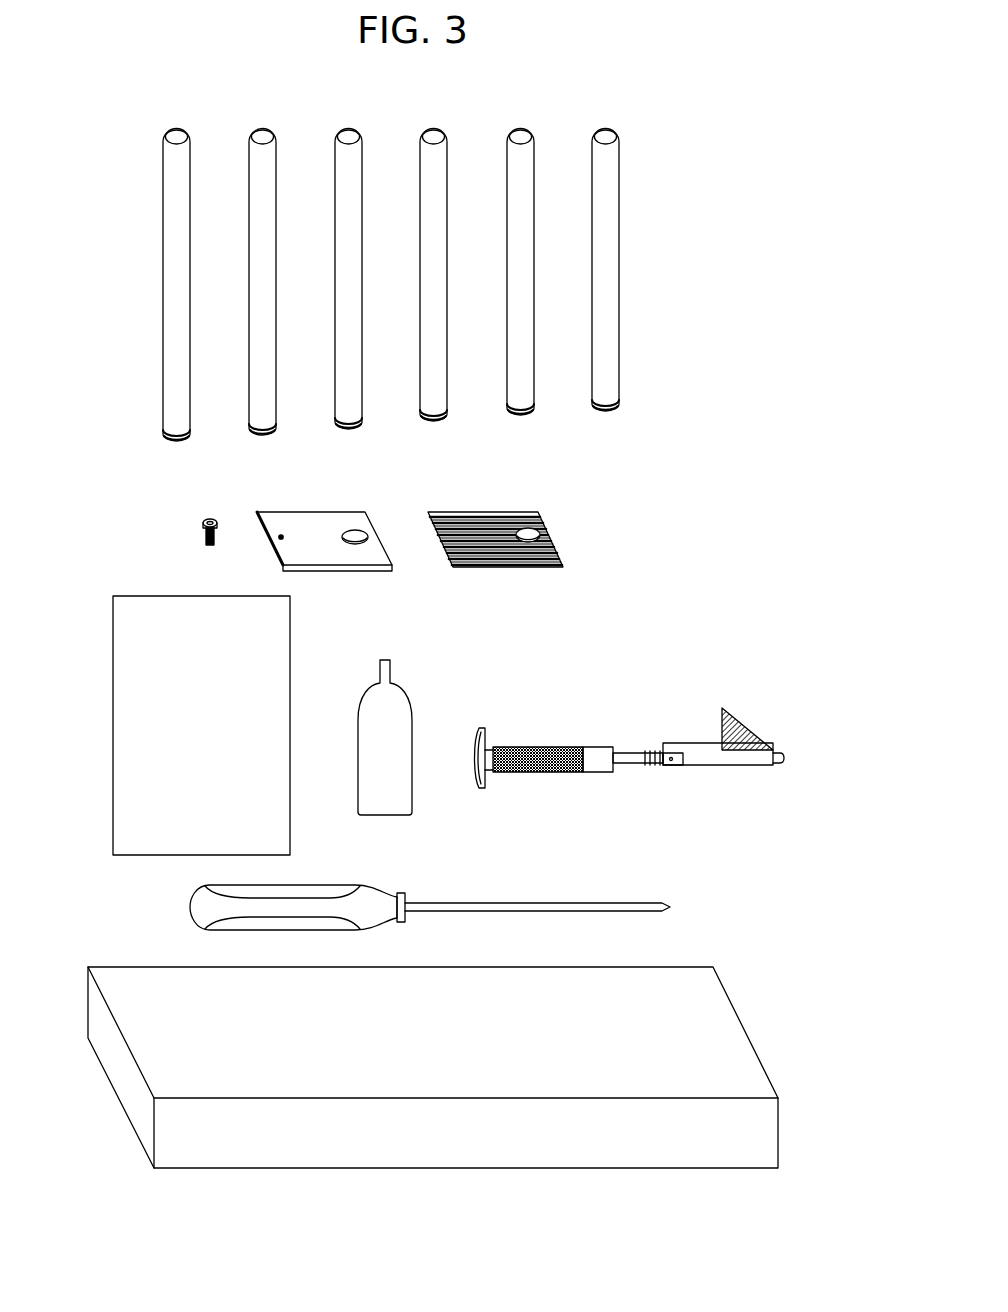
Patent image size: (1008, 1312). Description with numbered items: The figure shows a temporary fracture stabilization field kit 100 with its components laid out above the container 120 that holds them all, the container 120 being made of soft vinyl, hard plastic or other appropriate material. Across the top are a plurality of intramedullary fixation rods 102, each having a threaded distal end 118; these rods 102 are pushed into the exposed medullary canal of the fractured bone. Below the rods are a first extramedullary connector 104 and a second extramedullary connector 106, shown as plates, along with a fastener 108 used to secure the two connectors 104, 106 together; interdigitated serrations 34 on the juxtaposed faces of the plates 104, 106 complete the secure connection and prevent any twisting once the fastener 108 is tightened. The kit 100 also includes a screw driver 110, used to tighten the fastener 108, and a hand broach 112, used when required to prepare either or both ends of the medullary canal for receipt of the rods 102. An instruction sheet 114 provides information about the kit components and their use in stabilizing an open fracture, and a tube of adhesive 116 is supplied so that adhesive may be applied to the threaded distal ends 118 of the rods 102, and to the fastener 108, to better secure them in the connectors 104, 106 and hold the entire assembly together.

The temporary fracture stabilization field kit 100 is at (704, 180).
The intramedullary fixation rods 102 is at (187, 183).
The first extramedullary connector 104 is at (316, 518).
The second extramedullary connector 106 is at (530, 515).
The interdigitated serrations 34 is at (553, 537).
The fastener 108 is at (204, 521).
The screw driver 110 is at (366, 895).
The hand broach 112 is at (593, 745).
The instruction sheet 114 is at (126, 724).
The tube of adhesive 116 is at (403, 702).
The threaded distal ends 118 is at (163, 438).
The container 120 is at (134, 978).